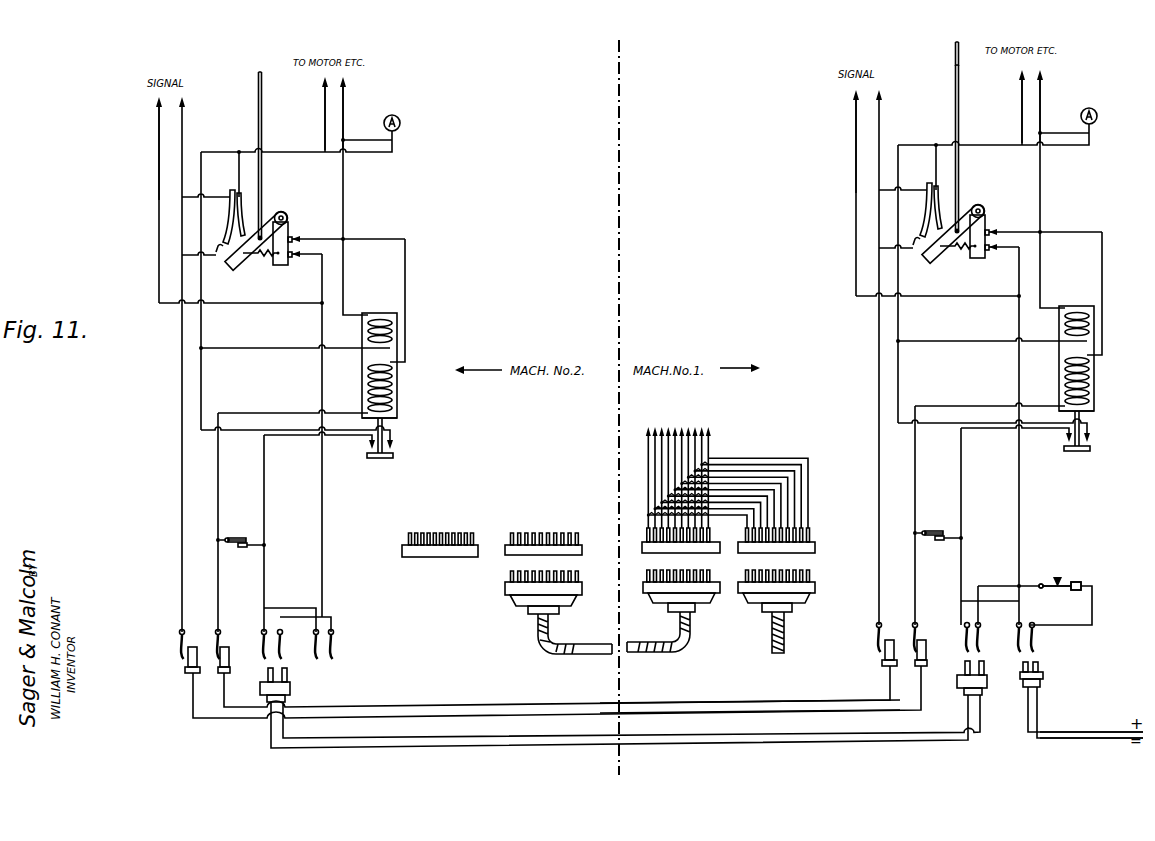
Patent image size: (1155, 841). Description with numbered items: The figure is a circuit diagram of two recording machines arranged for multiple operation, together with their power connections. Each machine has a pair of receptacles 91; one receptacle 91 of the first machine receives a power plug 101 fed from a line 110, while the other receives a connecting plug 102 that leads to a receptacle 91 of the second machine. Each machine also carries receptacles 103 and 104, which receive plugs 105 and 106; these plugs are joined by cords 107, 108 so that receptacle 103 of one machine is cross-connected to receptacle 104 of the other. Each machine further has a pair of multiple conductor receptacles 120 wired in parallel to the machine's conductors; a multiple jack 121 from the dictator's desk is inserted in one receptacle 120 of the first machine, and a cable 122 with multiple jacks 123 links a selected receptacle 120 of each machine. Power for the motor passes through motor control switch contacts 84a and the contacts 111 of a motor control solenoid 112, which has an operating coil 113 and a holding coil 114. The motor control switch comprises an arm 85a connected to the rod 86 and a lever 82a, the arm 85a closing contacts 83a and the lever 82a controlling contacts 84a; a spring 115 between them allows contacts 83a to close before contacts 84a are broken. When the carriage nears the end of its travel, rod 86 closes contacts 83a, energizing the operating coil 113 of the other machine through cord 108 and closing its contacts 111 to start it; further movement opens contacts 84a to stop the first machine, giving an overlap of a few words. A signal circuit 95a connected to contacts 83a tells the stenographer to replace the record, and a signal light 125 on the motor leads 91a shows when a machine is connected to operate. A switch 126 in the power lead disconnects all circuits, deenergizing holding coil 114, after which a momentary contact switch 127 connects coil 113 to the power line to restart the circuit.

The signal circuit 95a is at (170, 122).
The rod 86 is at (262, 112).
The motor leads 91a is at (346, 92).
The signal light 125 is at (400, 123).
The contacts 83a is at (237, 195).
The lever 82a is at (283, 212).
The motor control switch contacts 84a is at (294, 238).
The arm 85a is at (232, 268).
The spring 115 is at (266, 262).
The holding coil 114 is at (378, 322).
The motor control solenoid 112 is at (398, 385).
The operating coil 113 is at (398, 410).
The contacts of motor control solenoid 111 is at (385, 460).
The momentary contact switch 127 is at (247, 526).
The receptacle 104 is at (180, 632).
The plug 106 is at (185, 673).
The receptacle 103 is at (235, 618).
The plug 105 is at (230, 668).
The receptacles 91 is at (312, 640).
The connecting plug 102 is at (290, 686).
The multiple conductor receptacles 120 is at (750, 550).
The multiple jacks 123 is at (510, 603).
The cable 122 is at (556, 642).
The multiple jack 121 is at (812, 594).
The power plug 101 is at (1045, 672).
The line 110 is at (1080, 738).
The cord 107 is at (755, 712).
The cord 108 is at (720, 693).
The switch 126 is at (1065, 583).